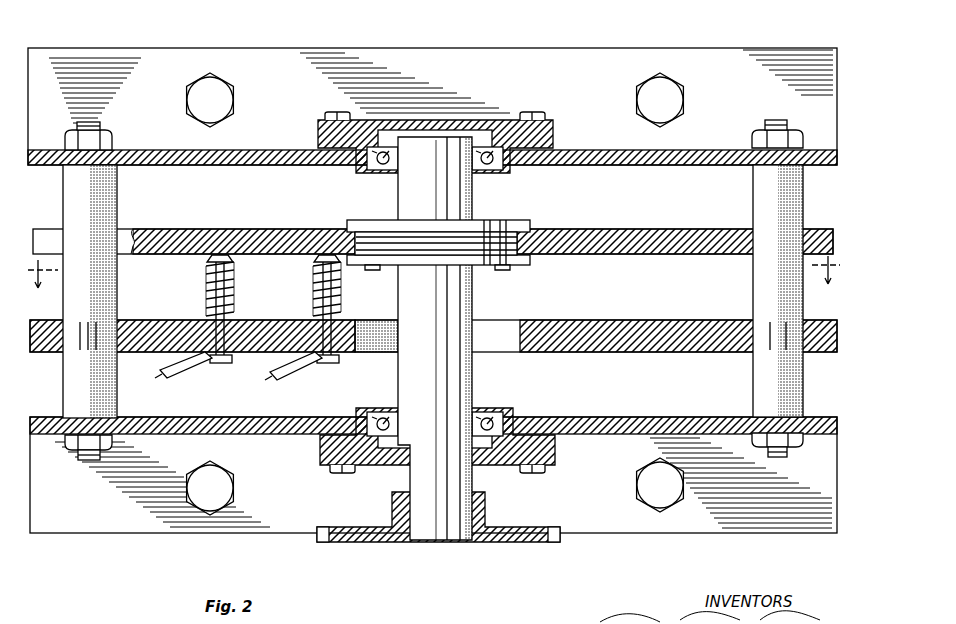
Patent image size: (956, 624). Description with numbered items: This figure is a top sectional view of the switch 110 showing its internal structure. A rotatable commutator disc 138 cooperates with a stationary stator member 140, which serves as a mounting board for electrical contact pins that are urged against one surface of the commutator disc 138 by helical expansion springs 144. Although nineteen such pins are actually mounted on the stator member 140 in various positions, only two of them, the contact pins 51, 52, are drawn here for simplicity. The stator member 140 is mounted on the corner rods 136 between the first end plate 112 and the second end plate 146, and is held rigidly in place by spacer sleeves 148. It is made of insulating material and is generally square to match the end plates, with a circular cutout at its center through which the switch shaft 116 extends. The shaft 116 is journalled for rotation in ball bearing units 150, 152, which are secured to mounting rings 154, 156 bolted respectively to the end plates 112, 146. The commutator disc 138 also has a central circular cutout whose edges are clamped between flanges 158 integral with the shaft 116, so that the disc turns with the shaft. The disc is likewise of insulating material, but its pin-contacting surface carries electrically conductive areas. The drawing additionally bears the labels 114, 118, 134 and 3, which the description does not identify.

The switch 110 is at (723, 41).
The first end plate 112 is at (265, 434).
The hex nuts 114 is at (441, 294).
The switch shaft 116 is at (435, 338).
The pulley flange 118 is at (395, 542).
The washers 134 is at (100, 124).
The corner rods 136 is at (112, 140).
The commutator disc 138 is at (233, 224).
The stator member 140 is at (261, 362).
The helical expansion springs 144 is at (313, 304).
The second end plate 146 is at (605, 165).
The spacer sleeves 148 is at (755, 386).
The ball bearing unit 150 is at (488, 408).
The ball bearing unit 152 is at (490, 172).
The mounting ring 154 is at (498, 462).
The mounting ring 156 is at (508, 120).
The flanges 158 is at (530, 222).
The contact pin 51 is at (208, 260).
The contact pin 52 is at (317, 260).
The section line 3- 3 is at (434, 285).